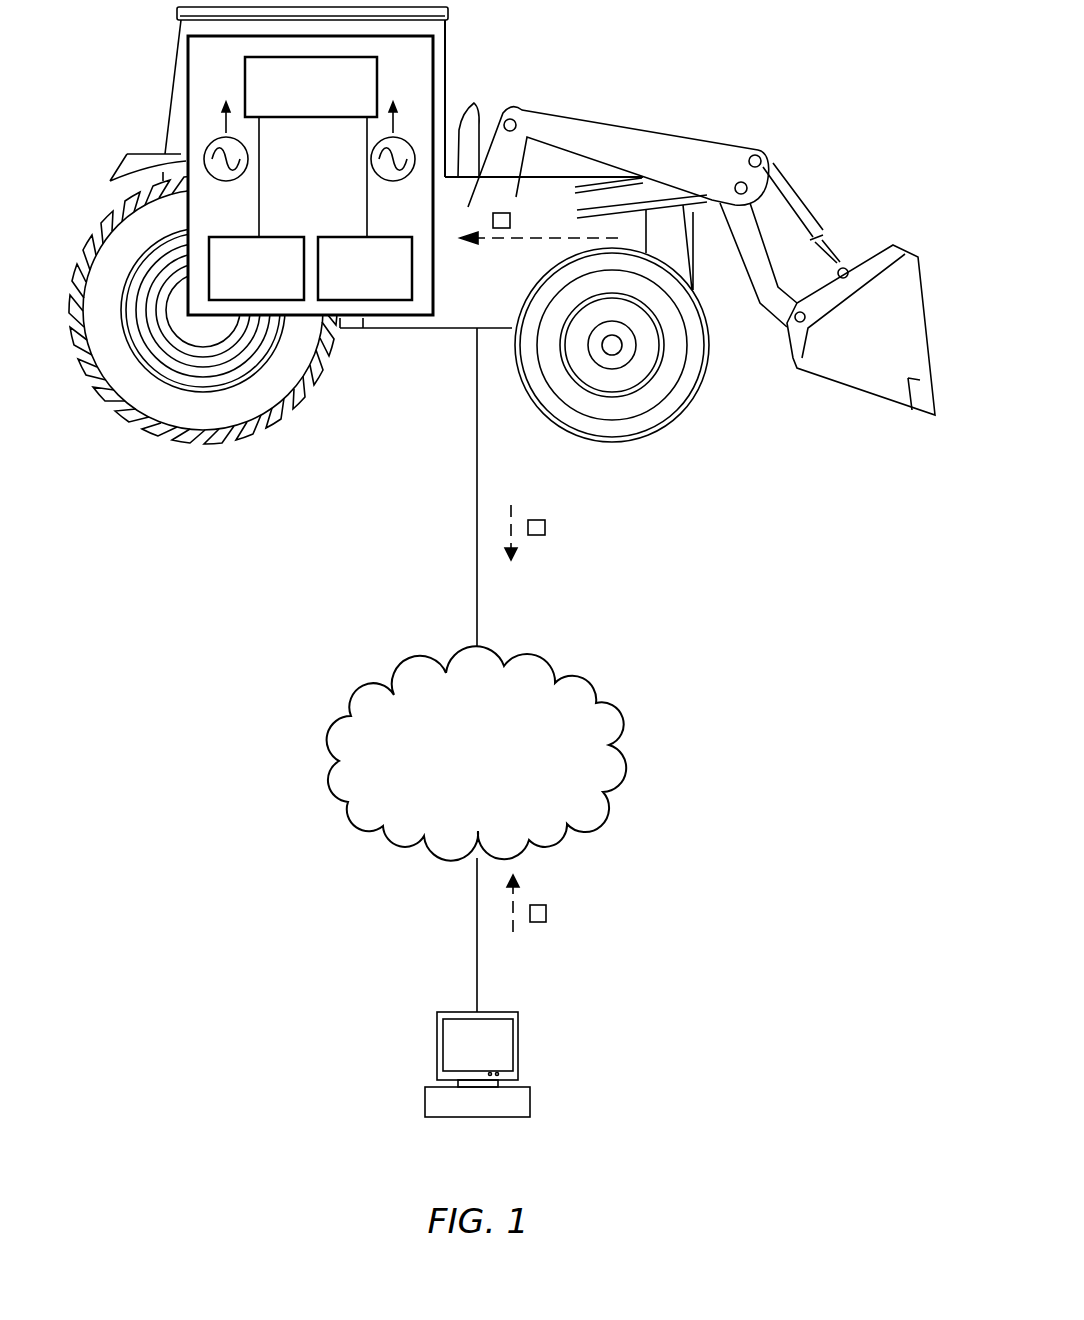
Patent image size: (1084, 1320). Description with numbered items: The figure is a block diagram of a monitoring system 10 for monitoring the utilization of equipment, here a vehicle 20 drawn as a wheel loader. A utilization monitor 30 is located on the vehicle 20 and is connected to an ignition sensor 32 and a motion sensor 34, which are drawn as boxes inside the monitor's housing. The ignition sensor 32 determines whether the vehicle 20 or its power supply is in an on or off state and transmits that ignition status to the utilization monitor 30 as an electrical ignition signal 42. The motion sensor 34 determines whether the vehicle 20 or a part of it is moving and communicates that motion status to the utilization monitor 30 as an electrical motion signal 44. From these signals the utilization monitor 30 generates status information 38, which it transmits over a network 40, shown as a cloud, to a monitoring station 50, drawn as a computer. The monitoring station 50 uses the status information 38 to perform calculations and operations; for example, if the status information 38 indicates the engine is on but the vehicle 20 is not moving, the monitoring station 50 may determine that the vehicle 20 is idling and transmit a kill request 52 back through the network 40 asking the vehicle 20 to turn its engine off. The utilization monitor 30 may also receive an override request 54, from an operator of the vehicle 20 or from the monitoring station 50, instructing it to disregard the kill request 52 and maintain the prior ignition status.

The monitoring system 10 is at (630, 48).
The vehicle 20 is at (610, 128).
The utilization monitor 30 is at (308, 118).
The ignition sensor 32 is at (232, 237).
The motion sensor 34 is at (388, 237).
The status information 38 is at (537, 520).
The network 40 is at (490, 788).
The ignition signal 42 is at (206, 143).
The motion signal 44 is at (408, 138).
The monitoring station 50 is at (530, 1100).
The kill request 52 is at (540, 922).
The override request 54 is at (511, 218).